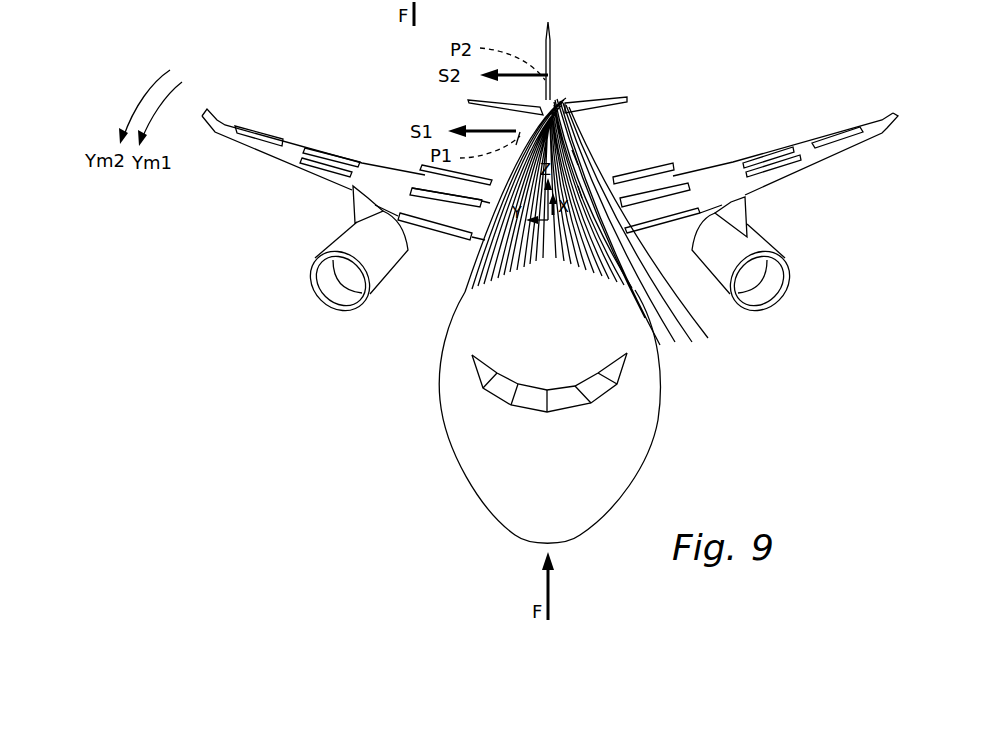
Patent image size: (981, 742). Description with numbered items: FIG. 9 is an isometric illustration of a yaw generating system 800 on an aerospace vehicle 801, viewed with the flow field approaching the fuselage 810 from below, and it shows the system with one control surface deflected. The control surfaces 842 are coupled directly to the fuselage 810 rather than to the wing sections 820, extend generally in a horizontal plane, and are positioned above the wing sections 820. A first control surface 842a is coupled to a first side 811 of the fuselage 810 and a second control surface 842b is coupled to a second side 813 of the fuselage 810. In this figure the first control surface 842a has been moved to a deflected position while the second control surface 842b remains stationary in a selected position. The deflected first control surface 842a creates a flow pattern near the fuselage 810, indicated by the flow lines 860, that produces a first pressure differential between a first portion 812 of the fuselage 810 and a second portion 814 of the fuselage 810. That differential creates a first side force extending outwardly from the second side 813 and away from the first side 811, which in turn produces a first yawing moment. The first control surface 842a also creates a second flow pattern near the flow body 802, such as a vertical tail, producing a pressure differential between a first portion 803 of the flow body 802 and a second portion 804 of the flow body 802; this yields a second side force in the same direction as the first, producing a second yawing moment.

The yaw generating system 800 is at (353, 521).
The aerospace vehicle 801 is at (660, 430).
The flow body 802 is at (554, 36).
The first portion of the flow body 803 is at (540, 100).
The second portion of the flow body 804 is at (560, 100).
The fuselage 810 is at (445, 362).
The first side of the fuselage 811 is at (660, 288).
The first portion of the fuselage 812 is at (574, 156).
The second side of the fuselage 813 is at (462, 276).
The second portion of the fuselage 814 is at (526, 128).
The wing sections 820 is at (375, 186).
The control surfaces 842 is at (340, 349).
The first control surface 842a is at (678, 192).
The second control surface 842b is at (445, 200).
The flow lines 860 is at (560, 188).